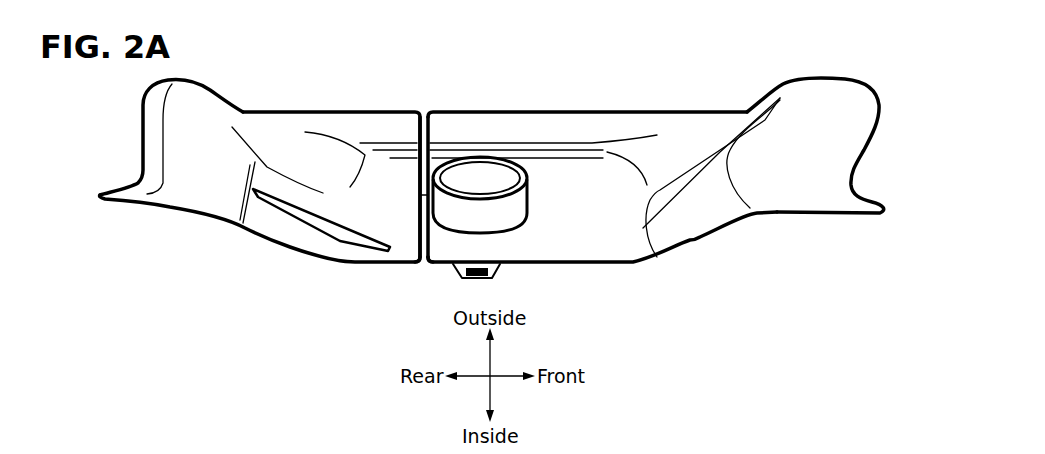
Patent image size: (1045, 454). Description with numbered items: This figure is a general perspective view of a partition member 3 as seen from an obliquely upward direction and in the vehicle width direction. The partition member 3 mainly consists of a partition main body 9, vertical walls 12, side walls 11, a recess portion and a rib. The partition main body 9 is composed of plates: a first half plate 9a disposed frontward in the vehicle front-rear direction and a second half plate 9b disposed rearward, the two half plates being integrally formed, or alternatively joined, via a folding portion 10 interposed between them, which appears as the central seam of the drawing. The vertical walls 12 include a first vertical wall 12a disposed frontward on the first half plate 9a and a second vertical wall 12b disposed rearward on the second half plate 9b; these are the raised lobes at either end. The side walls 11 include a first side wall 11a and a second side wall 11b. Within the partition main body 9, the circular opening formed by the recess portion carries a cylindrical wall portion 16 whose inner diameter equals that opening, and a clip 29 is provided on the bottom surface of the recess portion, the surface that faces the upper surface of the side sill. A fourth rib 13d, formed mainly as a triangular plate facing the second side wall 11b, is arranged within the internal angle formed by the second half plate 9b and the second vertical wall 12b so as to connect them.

The partition member 3 is at (672, 84).
The partition main body 9 is at (475, 53).
The first half plate 9a is at (470, 112).
The second half plate 9b is at (380, 110).
The folding portion 10 is at (413, 228).
The side wall 11 is at (508, 139).
The first side wall 11a is at (473, 130).
The second side wall 11b is at (387, 128).
The vertical wall 12 is at (463, 146).
The first vertical wall 12a is at (830, 97).
The second vertical wall 12b is at (170, 90).
The fourth rib 13d is at (340, 241).
The cylindrical wall portion 16 is at (513, 210).
The clip 29 is at (490, 278).